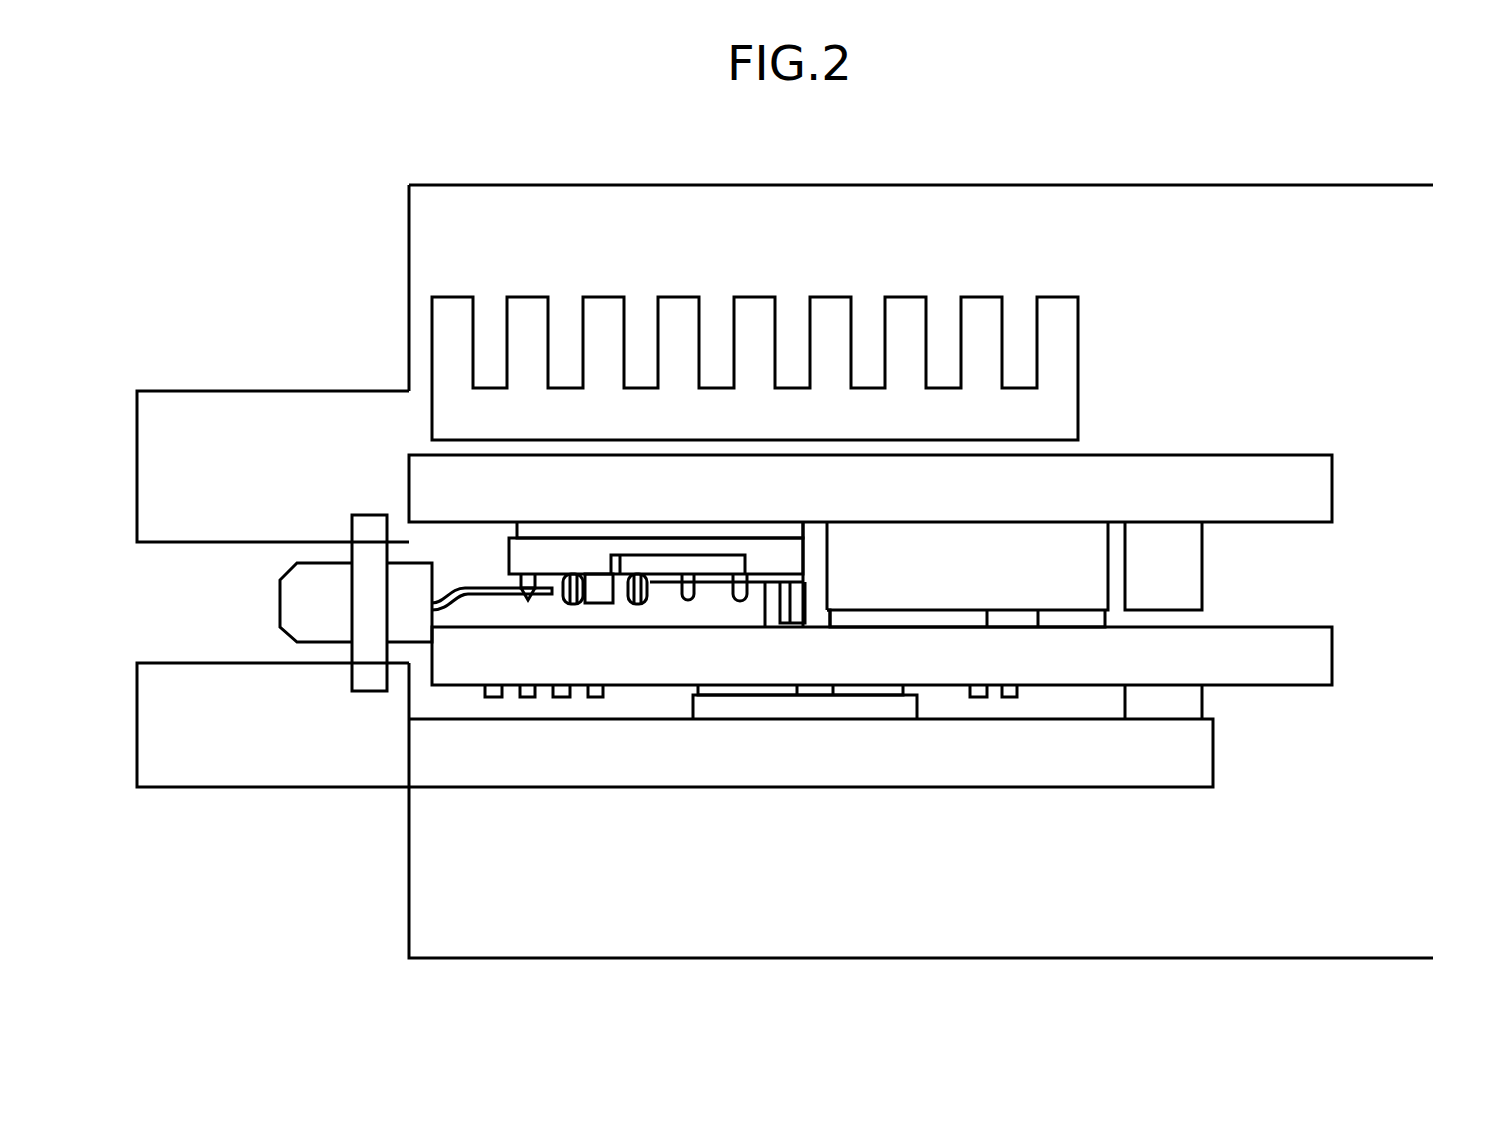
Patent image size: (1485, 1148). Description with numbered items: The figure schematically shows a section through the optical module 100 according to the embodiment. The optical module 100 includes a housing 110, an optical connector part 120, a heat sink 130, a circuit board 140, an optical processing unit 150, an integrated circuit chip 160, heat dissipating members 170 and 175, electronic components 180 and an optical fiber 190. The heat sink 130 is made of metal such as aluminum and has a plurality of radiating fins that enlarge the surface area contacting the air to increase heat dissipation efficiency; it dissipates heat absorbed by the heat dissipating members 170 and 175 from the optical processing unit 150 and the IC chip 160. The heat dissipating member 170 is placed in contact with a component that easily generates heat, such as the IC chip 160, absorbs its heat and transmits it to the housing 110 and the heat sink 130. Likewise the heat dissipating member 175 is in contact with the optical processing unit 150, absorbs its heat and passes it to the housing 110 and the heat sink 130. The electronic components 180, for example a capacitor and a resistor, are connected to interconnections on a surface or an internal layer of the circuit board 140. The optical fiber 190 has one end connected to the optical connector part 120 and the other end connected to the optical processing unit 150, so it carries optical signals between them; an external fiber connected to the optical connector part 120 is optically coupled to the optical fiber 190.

The optical module 100 is at (1257, 159).
The housing 110 is at (272, 391).
The optical connector part 120 is at (280, 604).
The heat sink 130 is at (1080, 414).
The circuit board 140 is at (1333, 655).
The optical processing unit 150 is at (496, 557).
The integrated circuit (IC) chip 160 is at (1072, 620).
The heat dissipating member 170 is at (1017, 558).
The heat dissipating member 175 is at (637, 522).
The electronic components 180 is at (561, 697).
The optical fiber 190 is at (467, 596).